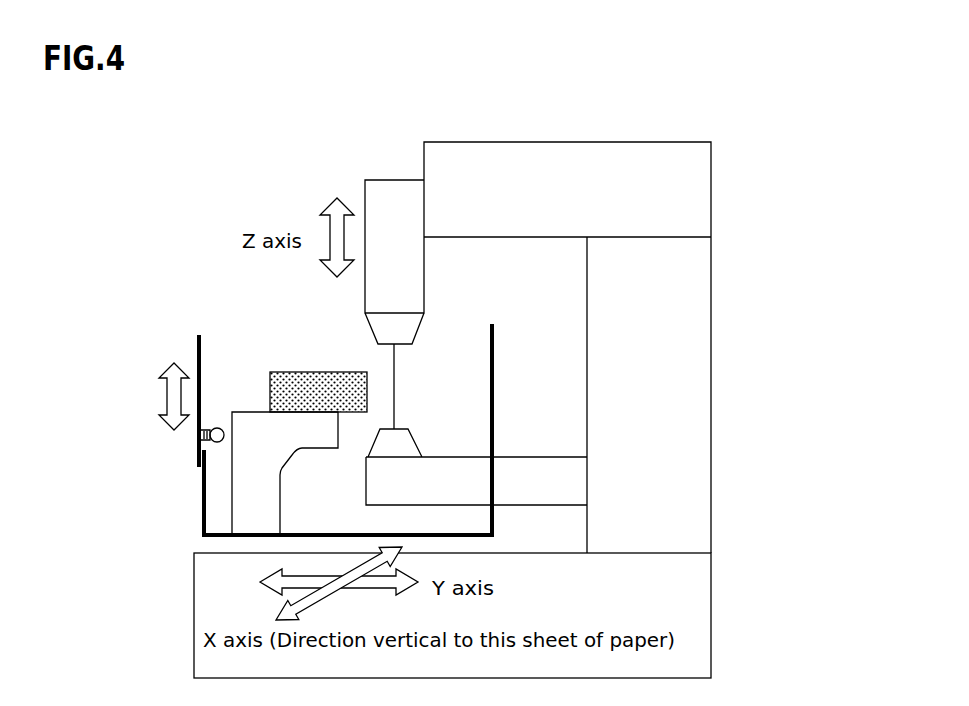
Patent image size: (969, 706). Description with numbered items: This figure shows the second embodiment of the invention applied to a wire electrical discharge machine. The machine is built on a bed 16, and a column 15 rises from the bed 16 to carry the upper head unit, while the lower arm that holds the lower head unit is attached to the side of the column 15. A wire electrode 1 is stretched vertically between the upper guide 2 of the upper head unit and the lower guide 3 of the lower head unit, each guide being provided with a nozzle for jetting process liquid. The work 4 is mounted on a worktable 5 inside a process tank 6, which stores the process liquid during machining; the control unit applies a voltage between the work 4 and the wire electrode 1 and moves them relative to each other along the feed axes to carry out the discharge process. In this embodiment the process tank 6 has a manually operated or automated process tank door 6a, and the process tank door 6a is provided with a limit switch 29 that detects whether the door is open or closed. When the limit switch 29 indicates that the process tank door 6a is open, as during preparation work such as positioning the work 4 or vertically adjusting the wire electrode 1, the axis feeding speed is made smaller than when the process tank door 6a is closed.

The wire electrode 1 is at (388, 367).
The upper guide 2 is at (407, 327).
The lower guide 3 is at (408, 443).
The work 4 is at (290, 372).
The worktable 5 is at (233, 513).
The process tank 6 is at (492, 362).
The process tank door 6a is at (199, 338).
The limit switch 29 is at (206, 446).
The column 15 is at (711, 515).
The bed 16 is at (711, 619).